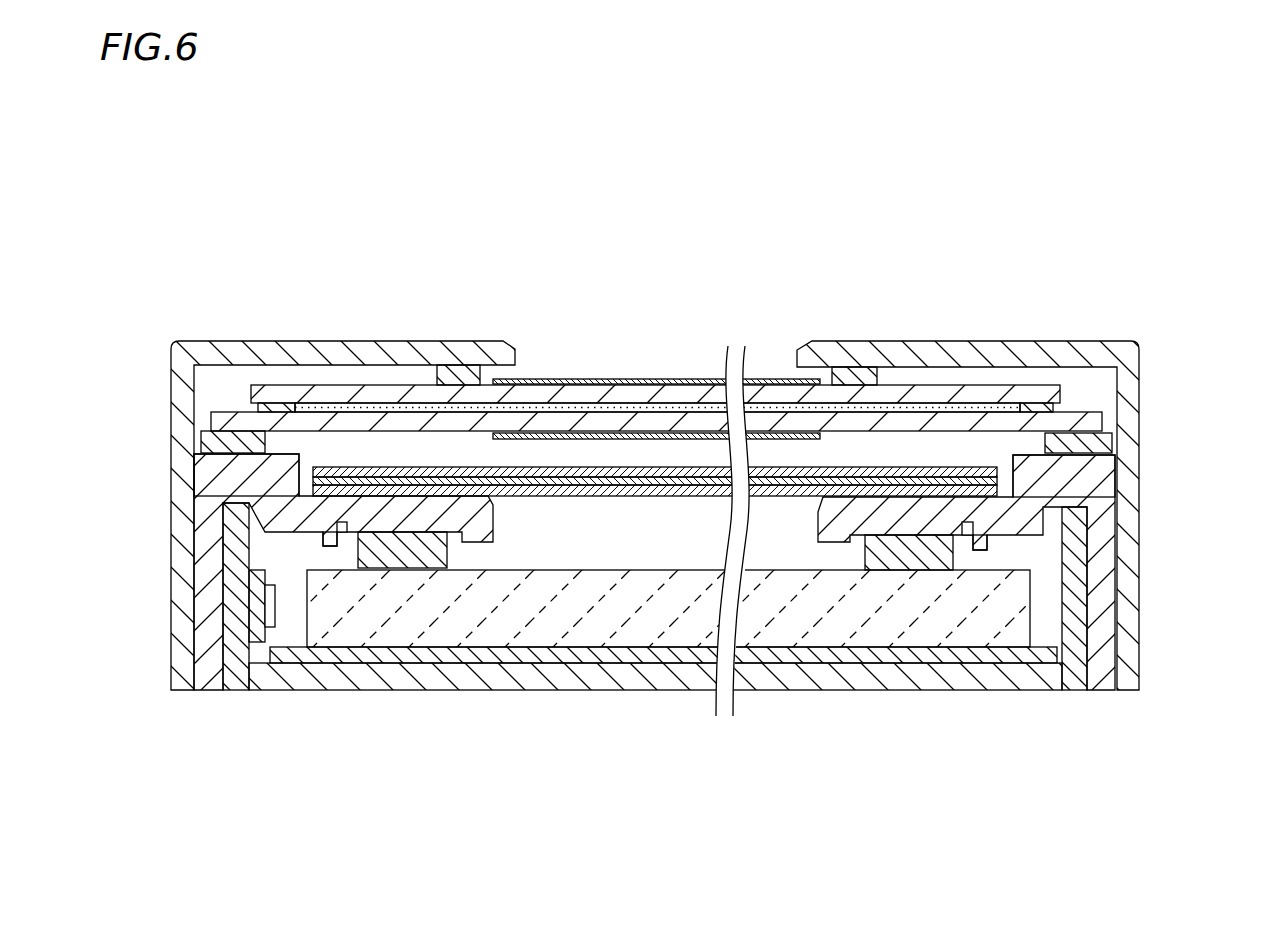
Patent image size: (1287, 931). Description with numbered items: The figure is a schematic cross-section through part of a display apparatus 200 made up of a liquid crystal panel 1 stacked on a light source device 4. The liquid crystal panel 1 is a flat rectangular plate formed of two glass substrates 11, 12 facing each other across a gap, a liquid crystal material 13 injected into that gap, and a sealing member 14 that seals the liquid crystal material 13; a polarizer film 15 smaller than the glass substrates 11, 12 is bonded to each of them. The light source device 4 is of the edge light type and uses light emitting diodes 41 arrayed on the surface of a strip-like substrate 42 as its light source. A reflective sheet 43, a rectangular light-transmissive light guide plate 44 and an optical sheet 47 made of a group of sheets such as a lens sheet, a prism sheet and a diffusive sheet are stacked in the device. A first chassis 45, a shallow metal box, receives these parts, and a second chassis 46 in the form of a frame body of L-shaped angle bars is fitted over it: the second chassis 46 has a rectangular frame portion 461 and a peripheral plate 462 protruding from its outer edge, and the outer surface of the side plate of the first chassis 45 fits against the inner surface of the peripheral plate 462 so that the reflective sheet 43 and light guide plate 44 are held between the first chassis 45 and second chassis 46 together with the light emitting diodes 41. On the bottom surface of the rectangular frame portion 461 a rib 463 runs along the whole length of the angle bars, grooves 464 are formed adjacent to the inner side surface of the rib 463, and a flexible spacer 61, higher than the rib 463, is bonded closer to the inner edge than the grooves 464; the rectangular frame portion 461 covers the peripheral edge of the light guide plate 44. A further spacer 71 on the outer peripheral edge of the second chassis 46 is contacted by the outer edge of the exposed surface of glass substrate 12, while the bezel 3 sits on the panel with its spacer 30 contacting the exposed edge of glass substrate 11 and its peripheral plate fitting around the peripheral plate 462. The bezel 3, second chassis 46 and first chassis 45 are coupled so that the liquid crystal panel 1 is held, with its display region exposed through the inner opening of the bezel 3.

The display apparatus 200 is at (262, 243).
The liquid crystal panel 1 is at (654, 356).
The glass substrate 11 is at (600, 385).
The glass substrate 12 is at (557, 412).
The liquid crystal material 13 is at (636, 420).
The sealing member 14 is at (258, 407).
The polarizer film 15 is at (706, 408).
The bezel 3 is at (1057, 341).
The spacer 30 is at (481, 368).
The light source device 4 is at (655, 732).
The light emitting diode 41 is at (275, 608).
The substrate 42 is at (262, 643).
The reflective sheet 43 is at (555, 660).
The light guide plate 44 is at (845, 635).
The first chassis 45 is at (443, 688).
The second chassis 46 is at (654, 620).
The rectangular frame portion 461 is at (280, 505).
The peripheral plate 462 is at (223, 630).
The rib 463 is at (337, 530).
The groove 464 is at (323, 543).
The optical sheet 47 is at (664, 496).
The spacer 61 is at (448, 550).
The spacer 71 is at (207, 445).